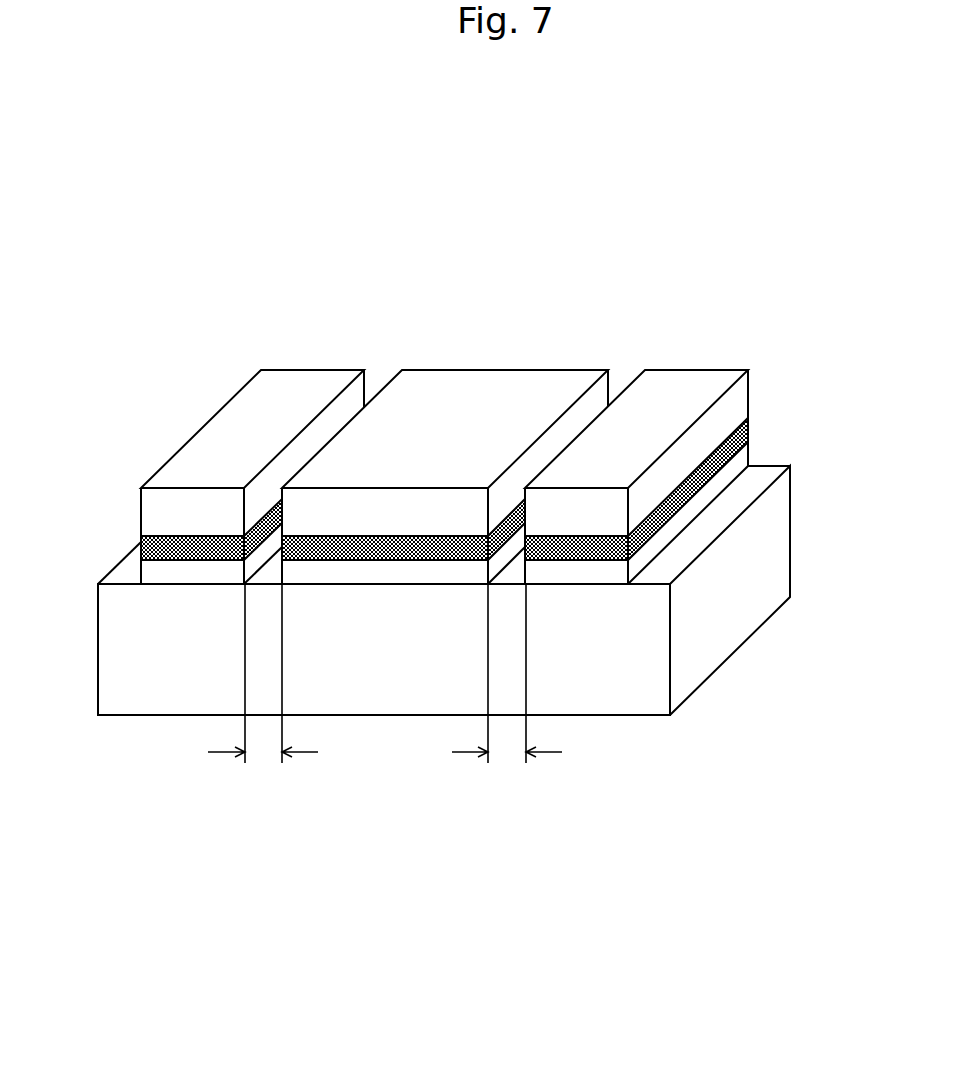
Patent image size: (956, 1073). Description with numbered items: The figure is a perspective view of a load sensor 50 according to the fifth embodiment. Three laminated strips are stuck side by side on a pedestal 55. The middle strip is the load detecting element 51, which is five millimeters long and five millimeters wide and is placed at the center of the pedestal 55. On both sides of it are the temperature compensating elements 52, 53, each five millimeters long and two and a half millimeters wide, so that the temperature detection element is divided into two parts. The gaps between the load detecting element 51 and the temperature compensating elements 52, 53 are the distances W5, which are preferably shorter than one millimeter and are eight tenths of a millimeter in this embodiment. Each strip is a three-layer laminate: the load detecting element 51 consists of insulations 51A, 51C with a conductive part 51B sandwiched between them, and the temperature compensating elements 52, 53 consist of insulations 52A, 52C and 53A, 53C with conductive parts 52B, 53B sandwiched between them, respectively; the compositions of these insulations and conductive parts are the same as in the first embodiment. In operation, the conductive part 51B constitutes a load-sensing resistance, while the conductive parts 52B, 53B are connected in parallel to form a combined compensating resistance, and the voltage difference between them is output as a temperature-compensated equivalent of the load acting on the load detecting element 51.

The load sensor 50 is at (278, 262).
The load detecting element 51 is at (445, 610).
The insulation 51A is at (365, 513).
The conductive part 51B is at (360, 560).
The insulation 51C is at (380, 573).
The temperature compensating element 52 is at (198, 454).
The insulation 52A is at (157, 503).
The conductive part 52B is at (157, 563).
The insulation 52C is at (175, 577).
The temperature compensating element 53 is at (700, 436).
The insulation 53A is at (733, 398).
The conductive part 53B is at (736, 449).
The insulation 53C is at (734, 470).
The pedestal 55 is at (633, 690).
The distance W5 is at (385, 693).